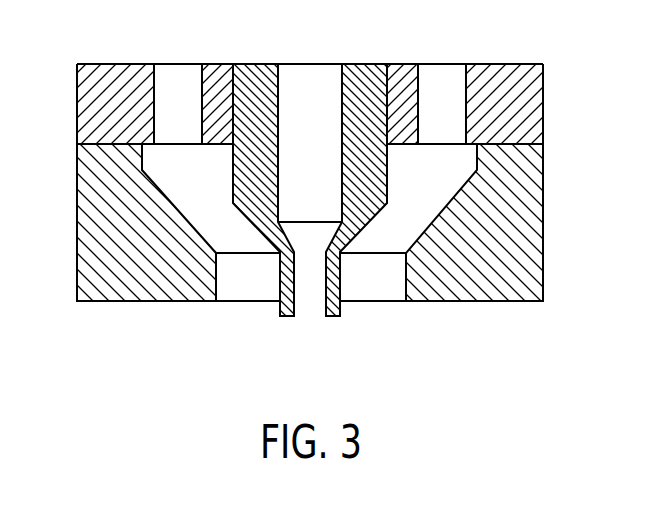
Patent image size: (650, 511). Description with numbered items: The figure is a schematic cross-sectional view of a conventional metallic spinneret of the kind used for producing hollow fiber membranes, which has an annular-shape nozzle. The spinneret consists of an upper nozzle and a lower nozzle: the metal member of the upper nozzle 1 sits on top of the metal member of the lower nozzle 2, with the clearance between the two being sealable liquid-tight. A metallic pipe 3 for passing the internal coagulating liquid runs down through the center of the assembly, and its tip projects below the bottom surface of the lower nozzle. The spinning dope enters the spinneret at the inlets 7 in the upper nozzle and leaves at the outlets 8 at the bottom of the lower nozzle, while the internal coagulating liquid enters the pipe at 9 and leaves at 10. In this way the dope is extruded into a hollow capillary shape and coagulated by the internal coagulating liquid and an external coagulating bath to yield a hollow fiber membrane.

The metal member of the upper nozzle 1 is at (105, 118).
The metal member of the lower nozzle 2 is at (98, 233).
The metallic pipe 3 is at (357, 72).
The spinning dope inlet 7 is at (180, 72).
The spinning dope outlet 8 is at (250, 293).
The internal coagulating liquid inlet 9 is at (312, 72).
The internal coagulating liquid outlet 10 is at (308, 303).